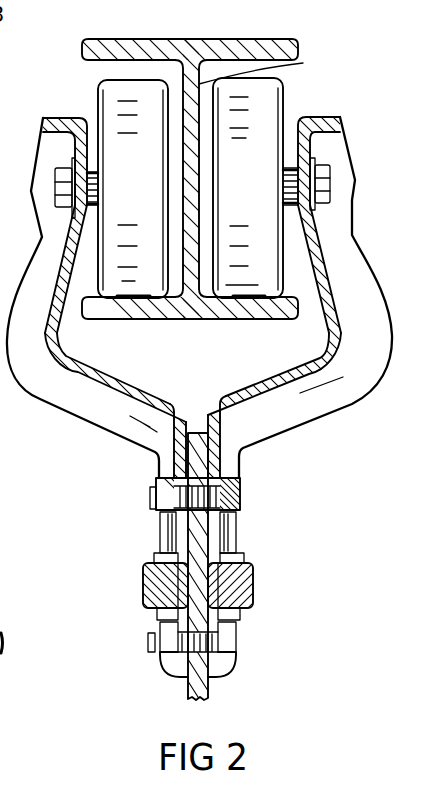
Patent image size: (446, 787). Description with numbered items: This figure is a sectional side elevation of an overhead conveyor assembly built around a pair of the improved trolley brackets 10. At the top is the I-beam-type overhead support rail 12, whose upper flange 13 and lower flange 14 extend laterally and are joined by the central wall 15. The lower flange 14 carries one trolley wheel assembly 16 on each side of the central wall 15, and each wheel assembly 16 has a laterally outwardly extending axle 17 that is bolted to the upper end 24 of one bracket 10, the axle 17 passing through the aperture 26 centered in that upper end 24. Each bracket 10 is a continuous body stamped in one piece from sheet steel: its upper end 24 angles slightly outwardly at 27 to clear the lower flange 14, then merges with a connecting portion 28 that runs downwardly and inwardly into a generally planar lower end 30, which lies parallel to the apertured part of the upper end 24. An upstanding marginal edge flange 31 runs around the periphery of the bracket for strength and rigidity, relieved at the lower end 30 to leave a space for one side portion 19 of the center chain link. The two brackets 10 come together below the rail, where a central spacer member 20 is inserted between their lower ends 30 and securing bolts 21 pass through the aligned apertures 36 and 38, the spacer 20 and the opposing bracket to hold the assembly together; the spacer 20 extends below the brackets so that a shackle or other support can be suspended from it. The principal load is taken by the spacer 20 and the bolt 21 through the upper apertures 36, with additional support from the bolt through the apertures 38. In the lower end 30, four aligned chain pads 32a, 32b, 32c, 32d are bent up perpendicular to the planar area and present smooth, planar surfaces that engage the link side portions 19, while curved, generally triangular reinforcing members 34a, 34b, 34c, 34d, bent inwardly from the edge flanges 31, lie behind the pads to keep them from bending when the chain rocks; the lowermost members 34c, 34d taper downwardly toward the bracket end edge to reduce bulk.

The trolley bracket 10 is at (47, 403).
The overhead support rail 12 is at (178, 37).
The upper flange 13 is at (284, 42).
The lower flange 14 is at (218, 306).
The central wall 15 is at (264, 68).
The trolley wheel assembly 16 is at (105, 100).
The axle 17 is at (78, 180).
The side portions 19 is at (143, 583).
The spacer member 20 is at (197, 430).
The securing bolts 21 is at (225, 487).
The upper end 24 is at (48, 148).
The aperture 26 is at (80, 194).
The outwardly angled portion 27 is at (66, 290).
The connecting portion 28 is at (117, 380).
The lower end 30 is at (178, 455).
The marginal edge flange 31 is at (118, 421).
The chain pad 32a is at (242, 557).
The chain pad 32b is at (155, 558).
The chain pad 32c is at (157, 616).
The chain pad 32d is at (240, 616).
The reinforcing member 34a is at (232, 548).
The reinforcing member 34b is at (165, 547).
The reinforcing member 34c is at (173, 668).
The reinforcing member 34d is at (229, 673).
The aperture 36 is at (150, 492).
The aperture 38 is at (150, 645).